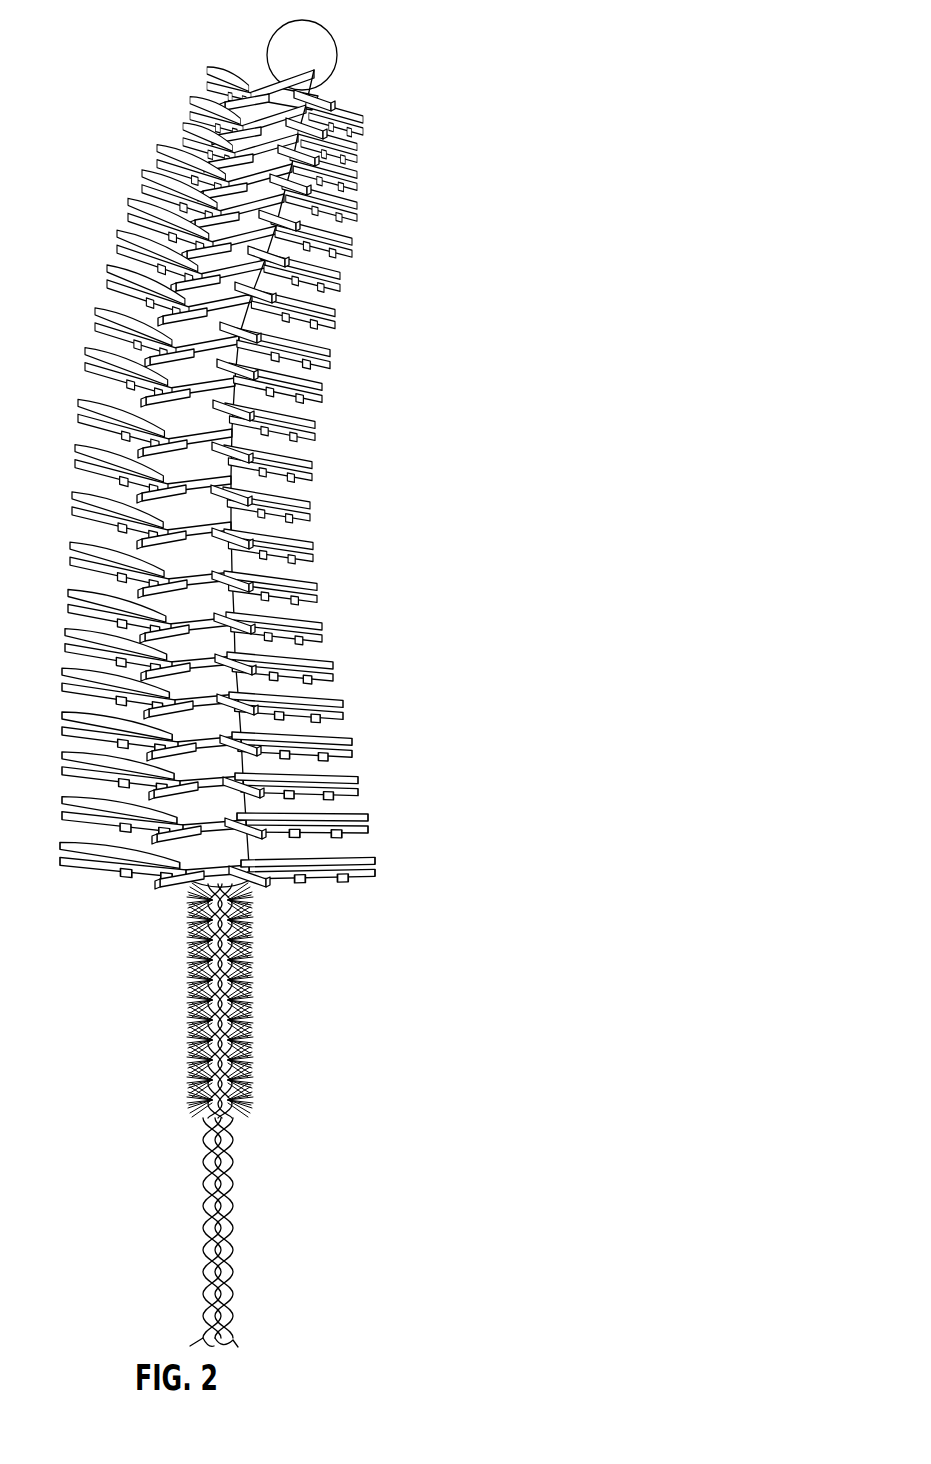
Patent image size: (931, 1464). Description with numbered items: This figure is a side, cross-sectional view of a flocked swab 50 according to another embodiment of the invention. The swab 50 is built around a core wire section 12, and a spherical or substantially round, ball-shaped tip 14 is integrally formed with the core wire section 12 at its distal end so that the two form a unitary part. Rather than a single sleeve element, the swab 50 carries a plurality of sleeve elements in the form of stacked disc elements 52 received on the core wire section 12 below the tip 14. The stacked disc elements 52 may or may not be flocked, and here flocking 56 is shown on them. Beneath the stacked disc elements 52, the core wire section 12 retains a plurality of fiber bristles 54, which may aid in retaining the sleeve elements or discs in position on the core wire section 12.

The swab 50 is at (580, 45).
The tip 14 is at (320, 63).
The stacked disc elements 52 is at (237, 477).
The flocking 56 is at (350, 113).
The fiber bristles 54 is at (262, 945).
The core wire section 12 is at (240, 1160).